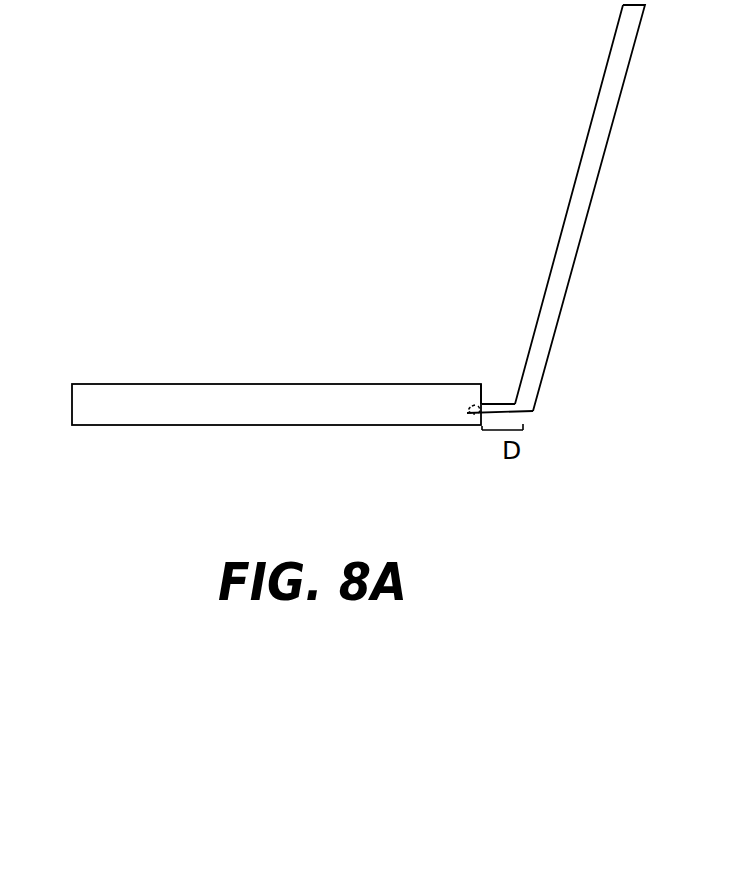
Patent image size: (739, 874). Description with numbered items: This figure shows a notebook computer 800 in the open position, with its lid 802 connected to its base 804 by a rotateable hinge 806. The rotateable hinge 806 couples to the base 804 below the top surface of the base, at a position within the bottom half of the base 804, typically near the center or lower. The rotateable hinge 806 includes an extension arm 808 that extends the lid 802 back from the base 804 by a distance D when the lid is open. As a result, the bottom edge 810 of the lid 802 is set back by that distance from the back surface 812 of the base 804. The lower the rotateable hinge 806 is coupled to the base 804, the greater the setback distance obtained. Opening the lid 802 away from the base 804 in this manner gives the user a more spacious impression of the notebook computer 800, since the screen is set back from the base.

The notebook computer 800 is at (244, 221).
The lid 802 is at (570, 253).
The base 804 is at (253, 405).
The rotateable hinge 806 is at (467, 415).
The extension arm 808 is at (495, 403).
The bottom edge 810 is at (508, 382).
The back surface 812 is at (482, 384).